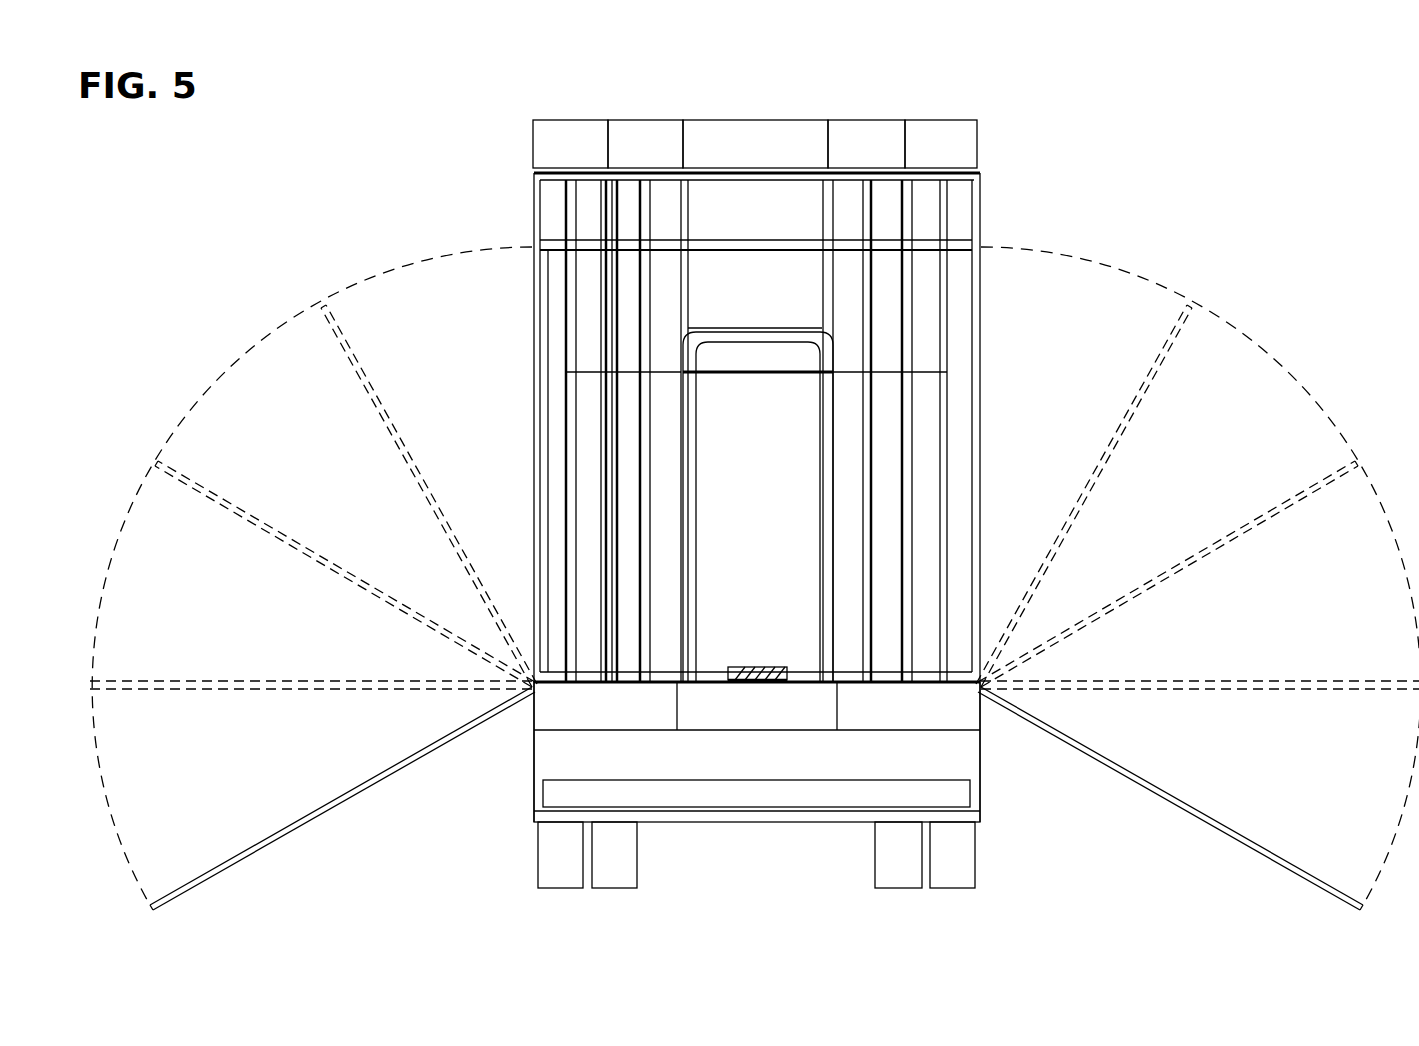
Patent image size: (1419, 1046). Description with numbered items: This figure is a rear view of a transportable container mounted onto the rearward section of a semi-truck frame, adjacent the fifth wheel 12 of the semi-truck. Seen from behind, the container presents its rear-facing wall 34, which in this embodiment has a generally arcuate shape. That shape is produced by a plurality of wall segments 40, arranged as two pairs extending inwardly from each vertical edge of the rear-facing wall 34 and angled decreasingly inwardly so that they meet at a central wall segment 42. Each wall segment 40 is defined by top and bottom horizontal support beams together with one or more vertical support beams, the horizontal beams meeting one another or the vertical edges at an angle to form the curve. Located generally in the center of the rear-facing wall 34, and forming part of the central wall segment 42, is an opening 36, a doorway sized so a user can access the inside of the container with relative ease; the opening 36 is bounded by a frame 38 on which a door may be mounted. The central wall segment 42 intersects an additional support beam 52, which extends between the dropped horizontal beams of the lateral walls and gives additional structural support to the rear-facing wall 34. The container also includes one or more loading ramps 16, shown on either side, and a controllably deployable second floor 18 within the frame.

The fifth wheel 12 is at (787, 677).
The loading ramp 16 is at (345, 803).
The controllably deployable second floor 18 is at (935, 370).
The rear-facing wall 34 is at (1003, 470).
The opening 36 is at (720, 655).
The frame 38 is at (675, 625).
The wall segments 40 is at (573, 120).
The central wall segment 42 is at (750, 120).
The additional support beam 52 is at (555, 240).